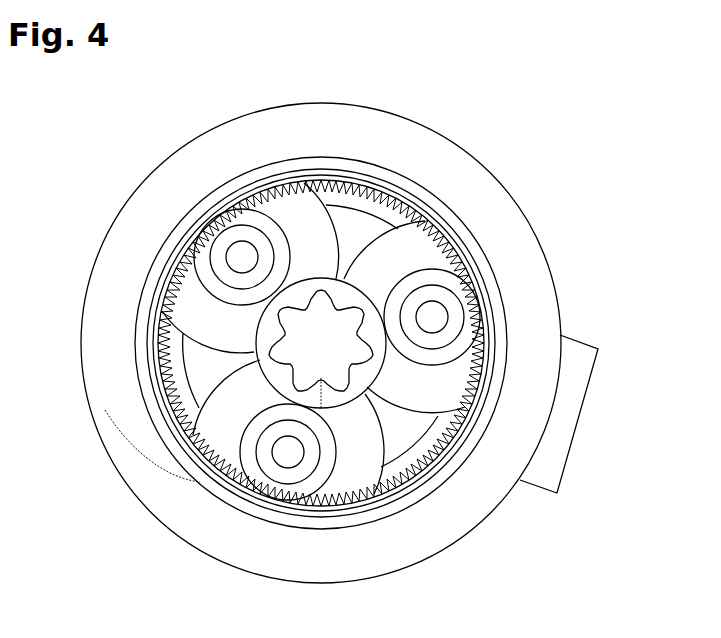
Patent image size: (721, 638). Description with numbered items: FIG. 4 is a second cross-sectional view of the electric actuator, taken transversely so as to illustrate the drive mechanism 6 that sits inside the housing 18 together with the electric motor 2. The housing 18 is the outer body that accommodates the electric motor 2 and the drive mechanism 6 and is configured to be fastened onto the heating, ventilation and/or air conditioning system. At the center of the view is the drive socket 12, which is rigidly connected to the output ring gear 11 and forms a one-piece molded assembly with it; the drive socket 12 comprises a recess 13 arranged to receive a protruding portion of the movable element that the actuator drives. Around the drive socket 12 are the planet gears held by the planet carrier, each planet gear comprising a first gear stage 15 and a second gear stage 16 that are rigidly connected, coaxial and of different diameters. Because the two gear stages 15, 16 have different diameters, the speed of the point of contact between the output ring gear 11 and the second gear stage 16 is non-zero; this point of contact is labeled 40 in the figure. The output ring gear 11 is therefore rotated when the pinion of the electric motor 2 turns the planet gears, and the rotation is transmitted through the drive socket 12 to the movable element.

The electric motor 2 is at (160, 392).
The drive mechanism 6 is at (520, 151).
The output ring gear 11 is at (345, 280).
The drive socket 12 is at (315, 282).
The recess 13 is at (333, 385).
The first gear stage 15 is at (207, 342).
The second gear stage 16 is at (222, 276).
The housing 18 is at (120, 407).
The point of contact 40 is at (200, 221).